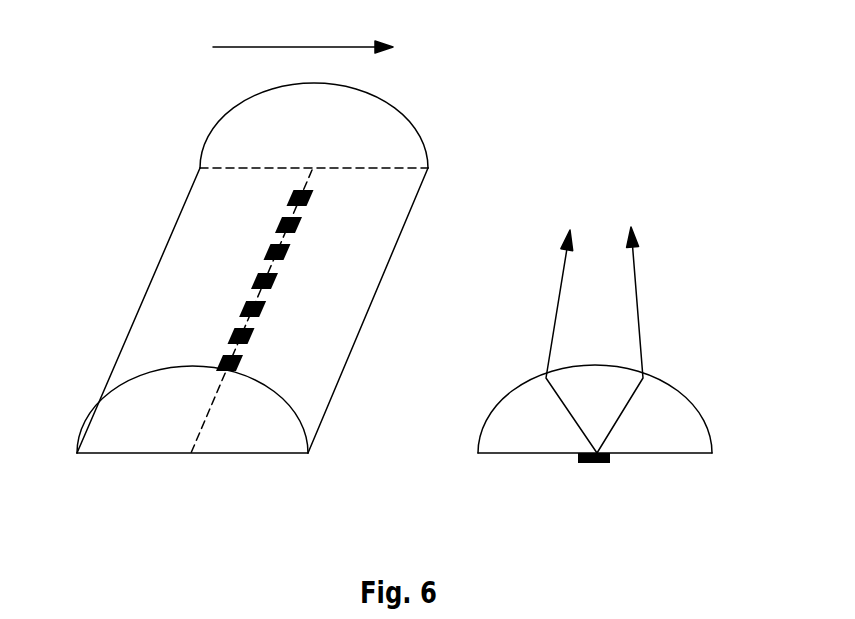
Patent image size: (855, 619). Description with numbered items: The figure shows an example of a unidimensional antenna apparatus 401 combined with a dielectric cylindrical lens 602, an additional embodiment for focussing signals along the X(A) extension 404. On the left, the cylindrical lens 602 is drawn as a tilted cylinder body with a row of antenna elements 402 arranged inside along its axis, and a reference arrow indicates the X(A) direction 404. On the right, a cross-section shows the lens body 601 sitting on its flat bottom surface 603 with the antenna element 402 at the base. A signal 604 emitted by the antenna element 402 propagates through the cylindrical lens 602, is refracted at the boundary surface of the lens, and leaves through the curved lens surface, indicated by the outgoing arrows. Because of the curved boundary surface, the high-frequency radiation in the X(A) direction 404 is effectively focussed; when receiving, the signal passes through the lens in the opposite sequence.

The unidimensional antenna apparatus 401 is at (300, 225).
The antenna element 402 is at (598, 463).
The X(A) extension 404 is at (233, 48).
The lens 601 is at (273, 397).
The dielectric cylindrical lens 602 is at (673, 395).
The lens bottom surface 603 is at (507, 455).
The signal 604 is at (633, 268).